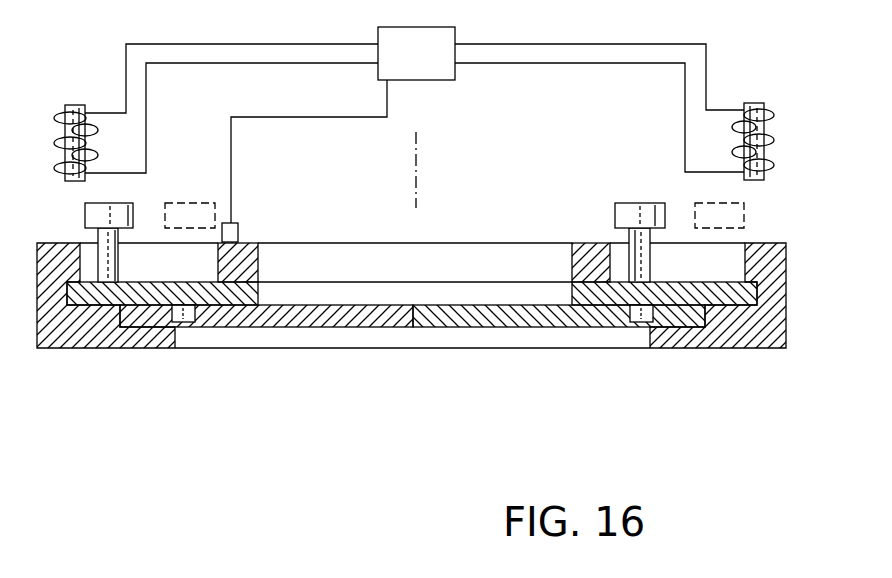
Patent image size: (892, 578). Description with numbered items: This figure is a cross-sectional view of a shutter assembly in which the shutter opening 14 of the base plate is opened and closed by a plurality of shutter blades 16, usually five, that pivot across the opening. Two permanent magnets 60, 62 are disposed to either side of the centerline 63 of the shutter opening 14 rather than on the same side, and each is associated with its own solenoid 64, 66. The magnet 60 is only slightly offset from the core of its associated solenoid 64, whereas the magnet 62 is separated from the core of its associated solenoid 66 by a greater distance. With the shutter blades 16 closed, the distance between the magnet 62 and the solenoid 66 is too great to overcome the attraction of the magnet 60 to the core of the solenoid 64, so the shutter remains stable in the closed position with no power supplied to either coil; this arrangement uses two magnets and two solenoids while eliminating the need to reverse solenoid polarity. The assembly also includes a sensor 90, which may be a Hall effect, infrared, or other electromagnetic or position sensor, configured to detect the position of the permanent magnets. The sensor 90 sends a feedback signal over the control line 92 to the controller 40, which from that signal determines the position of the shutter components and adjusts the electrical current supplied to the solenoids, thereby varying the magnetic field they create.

The shutter opening 14 is at (570, 262).
The shutter blades 16 is at (437, 327).
The controller 40 is at (406, 61).
The magnet 60 is at (85, 212).
The magnet 62 is at (633, 200).
The centerline 63 is at (418, 140).
The solenoid 64 is at (65, 112).
The solenoid 66 is at (768, 115).
The sensor 90 is at (238, 230).
The control line 92 is at (387, 99).